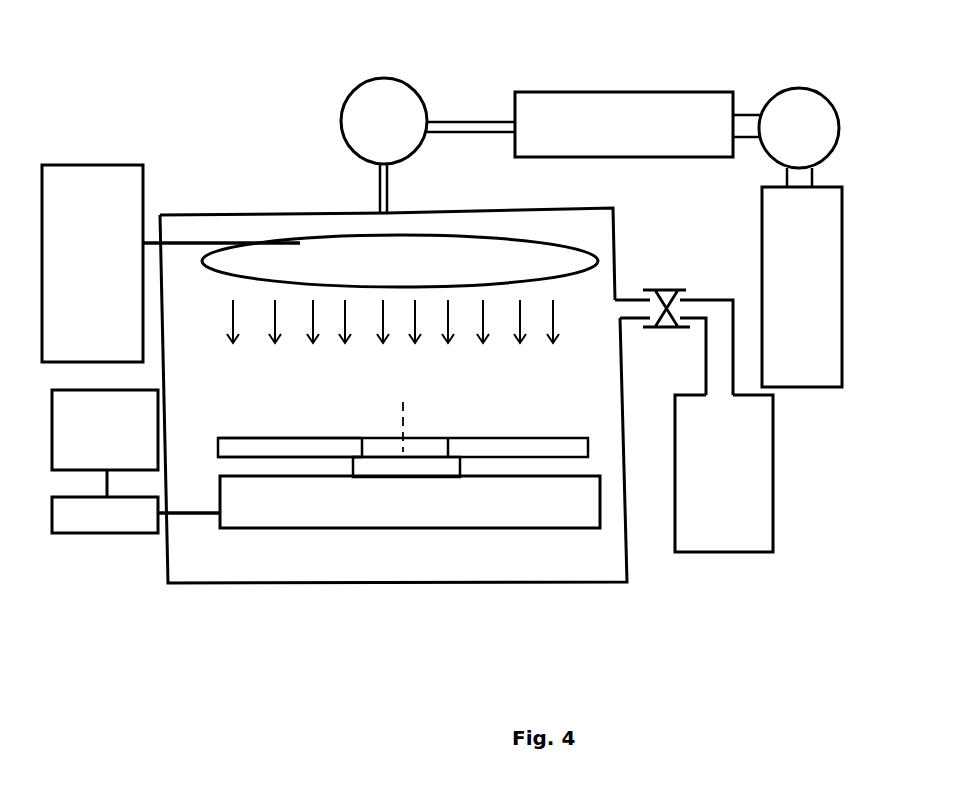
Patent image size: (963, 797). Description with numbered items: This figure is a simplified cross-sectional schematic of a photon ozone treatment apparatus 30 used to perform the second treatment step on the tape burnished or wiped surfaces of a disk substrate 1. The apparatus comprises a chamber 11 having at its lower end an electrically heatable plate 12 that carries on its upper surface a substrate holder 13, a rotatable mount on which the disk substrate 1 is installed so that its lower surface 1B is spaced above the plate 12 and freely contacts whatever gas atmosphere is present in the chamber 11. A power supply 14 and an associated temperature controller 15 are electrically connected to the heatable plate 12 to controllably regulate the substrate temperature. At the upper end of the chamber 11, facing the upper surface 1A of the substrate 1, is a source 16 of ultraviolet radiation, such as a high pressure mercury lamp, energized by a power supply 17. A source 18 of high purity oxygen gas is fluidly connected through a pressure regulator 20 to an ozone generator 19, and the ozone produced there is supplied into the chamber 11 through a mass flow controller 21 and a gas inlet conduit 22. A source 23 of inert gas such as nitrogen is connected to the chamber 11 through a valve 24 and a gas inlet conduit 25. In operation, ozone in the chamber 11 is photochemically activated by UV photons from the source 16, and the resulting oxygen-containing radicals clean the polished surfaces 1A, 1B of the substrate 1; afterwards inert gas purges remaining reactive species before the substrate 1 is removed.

The photon ozone treatment apparatus 30 is at (236, 156).
The chamber 11 is at (557, 588).
The electrically heatable plate 12 is at (447, 518).
The substrate holder 13 is at (390, 480).
The power supply 14 is at (102, 446).
The temperature controller 15 is at (82, 533).
The source of ultra-violet radiation 16 is at (400, 276).
The power supply 17 is at (93, 277).
The source of high purity oxygen gas 18 is at (813, 301).
The ozone generator 19 is at (628, 145).
The pressure regulator 20 is at (855, 114).
The mass flow controller 21 is at (364, 121).
The gas inlet conduit 22 is at (368, 199).
The source of inert gas 23 is at (735, 502).
The valve 24 is at (663, 277).
The gas inlet conduit 25 is at (628, 290).
The disk substrate 1 is at (539, 438).
The upper surface of substrate 1A is at (228, 437).
The lower surface of substrate 1B is at (228, 463).